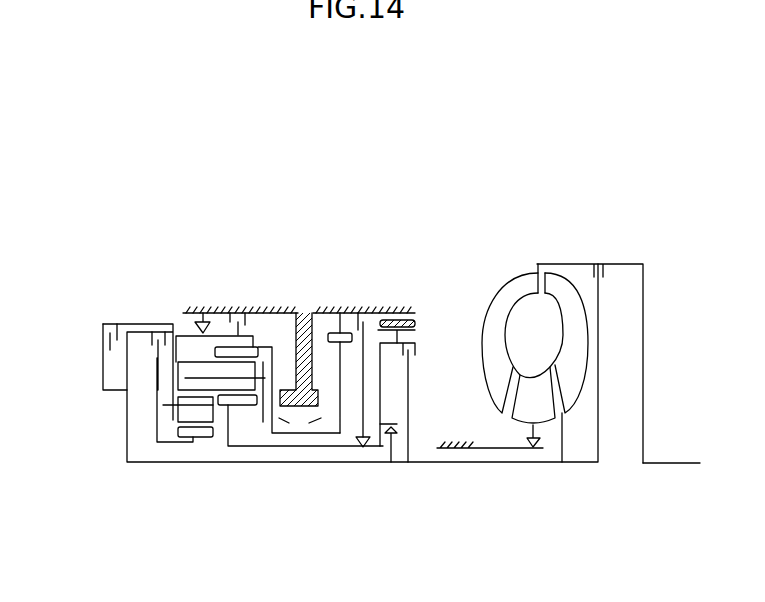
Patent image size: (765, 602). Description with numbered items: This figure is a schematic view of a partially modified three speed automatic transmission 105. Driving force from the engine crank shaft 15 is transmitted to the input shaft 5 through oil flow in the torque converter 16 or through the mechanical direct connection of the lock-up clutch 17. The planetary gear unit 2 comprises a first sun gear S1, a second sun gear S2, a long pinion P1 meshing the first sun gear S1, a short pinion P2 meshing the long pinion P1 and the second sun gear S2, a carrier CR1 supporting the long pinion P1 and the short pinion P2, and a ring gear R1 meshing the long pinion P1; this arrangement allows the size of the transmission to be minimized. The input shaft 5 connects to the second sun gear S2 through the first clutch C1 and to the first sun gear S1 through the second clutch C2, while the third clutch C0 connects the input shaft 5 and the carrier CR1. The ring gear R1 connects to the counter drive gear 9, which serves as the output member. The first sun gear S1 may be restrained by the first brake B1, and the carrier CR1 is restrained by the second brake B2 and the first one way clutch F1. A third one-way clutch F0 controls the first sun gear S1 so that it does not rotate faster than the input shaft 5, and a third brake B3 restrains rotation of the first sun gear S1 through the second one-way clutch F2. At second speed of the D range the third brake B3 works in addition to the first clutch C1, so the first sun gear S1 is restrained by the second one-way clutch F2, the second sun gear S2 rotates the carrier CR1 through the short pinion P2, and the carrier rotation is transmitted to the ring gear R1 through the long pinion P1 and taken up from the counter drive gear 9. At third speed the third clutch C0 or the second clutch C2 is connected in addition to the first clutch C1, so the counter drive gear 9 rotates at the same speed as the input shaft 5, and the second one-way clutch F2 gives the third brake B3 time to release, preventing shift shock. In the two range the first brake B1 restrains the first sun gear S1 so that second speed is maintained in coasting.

The three speed automatic transmission 105 is at (148, 156).
The planetary gear unit 2 is at (178, 321).
The input shaft 5 is at (380, 463).
The counter drive gear 9 is at (341, 313).
The engine crank shaft 15 is at (670, 463).
The torque converter 16 is at (513, 282).
The lock-up clutch 17 is at (604, 270).
The third clutch C0 is at (104, 337).
The first clutch C1 is at (152, 343).
The second clutch C2 is at (415, 350).
The first brake B1 is at (412, 320).
The second brake B2 is at (229, 313).
The third brake B3 is at (359, 314).
The third one-way clutch F0 is at (397, 430).
The first one way clutch F1 is at (202, 320).
The second one-way clutch F2 is at (361, 448).
The long pinion P1 is at (187, 382).
The short pinion P2 is at (185, 413).
The ring gear R1 is at (247, 350).
The first sun gear S1 is at (228, 446).
The second sun gear S2 is at (200, 437).
The carrier CR1 is at (165, 405).